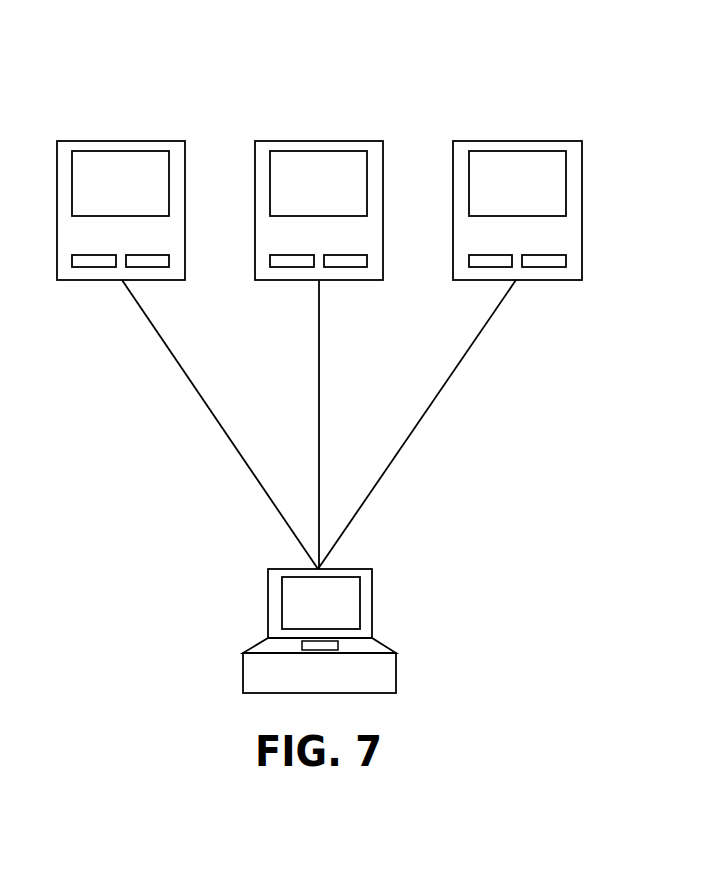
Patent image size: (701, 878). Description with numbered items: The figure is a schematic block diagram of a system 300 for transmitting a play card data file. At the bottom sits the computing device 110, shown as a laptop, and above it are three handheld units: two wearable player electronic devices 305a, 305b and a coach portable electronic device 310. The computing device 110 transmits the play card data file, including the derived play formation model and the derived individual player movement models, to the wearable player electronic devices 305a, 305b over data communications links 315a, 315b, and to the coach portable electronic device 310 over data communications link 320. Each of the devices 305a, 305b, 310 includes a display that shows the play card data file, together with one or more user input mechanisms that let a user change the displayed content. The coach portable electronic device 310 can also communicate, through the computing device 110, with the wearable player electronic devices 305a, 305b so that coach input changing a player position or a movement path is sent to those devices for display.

The system 300 is at (181, 55).
The wearable player electronic device 305a is at (200, 194).
The wearable player electronic device 305b is at (398, 194).
The coach portable electronic device 310 is at (597, 194).
The data communications link 315a is at (187, 378).
The data communications link 315b is at (319, 418).
The data communications link 320 is at (452, 377).
The computing device 110 is at (228, 675).